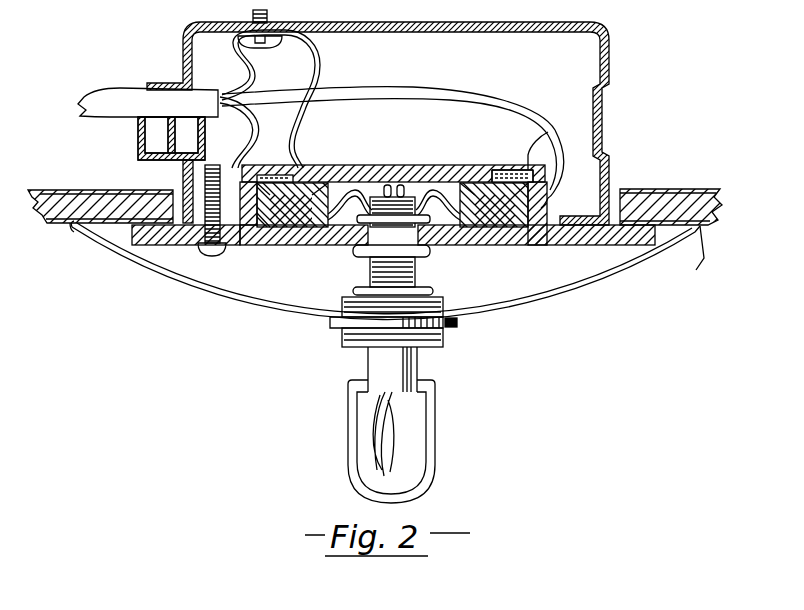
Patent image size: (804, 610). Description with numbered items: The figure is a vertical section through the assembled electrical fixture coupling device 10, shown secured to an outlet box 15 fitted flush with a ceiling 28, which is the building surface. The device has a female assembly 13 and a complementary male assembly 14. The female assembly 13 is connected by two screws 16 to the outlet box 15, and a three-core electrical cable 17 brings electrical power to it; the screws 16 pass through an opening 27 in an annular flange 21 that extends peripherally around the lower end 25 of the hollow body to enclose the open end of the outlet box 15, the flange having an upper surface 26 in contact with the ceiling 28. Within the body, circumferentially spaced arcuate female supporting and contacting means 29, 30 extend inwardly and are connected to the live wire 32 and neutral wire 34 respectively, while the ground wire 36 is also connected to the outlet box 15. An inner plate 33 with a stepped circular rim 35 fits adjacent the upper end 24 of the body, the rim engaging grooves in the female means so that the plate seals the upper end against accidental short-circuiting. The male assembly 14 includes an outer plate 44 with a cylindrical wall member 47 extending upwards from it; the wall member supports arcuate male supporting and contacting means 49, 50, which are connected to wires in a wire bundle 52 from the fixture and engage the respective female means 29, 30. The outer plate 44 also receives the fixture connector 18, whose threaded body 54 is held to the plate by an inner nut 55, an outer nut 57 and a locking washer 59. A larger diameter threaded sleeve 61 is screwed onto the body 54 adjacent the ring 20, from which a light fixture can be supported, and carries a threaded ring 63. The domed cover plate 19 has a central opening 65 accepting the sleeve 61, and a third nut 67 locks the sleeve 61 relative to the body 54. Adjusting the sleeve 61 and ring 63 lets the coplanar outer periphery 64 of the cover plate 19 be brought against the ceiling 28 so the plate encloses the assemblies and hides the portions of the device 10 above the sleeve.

The electrical fixture coupling device 10 is at (145, 286).
The female assembly 13 is at (540, 128).
The male assembly 14 is at (280, 290).
The outlet box 15 is at (432, 12).
The screws 16 is at (205, 186).
The three-core electrical cable 17 is at (104, 98).
The fixture connector 18 is at (438, 354).
The domed cover plate 19 is at (524, 312).
The ring 20 is at (418, 486).
The annular flange 21 is at (222, 246).
The upper end 24 is at (541, 141).
The lower end 25 is at (545, 248).
The upper surface 26 is at (148, 222).
The opening 27 is at (200, 230).
The ceiling 28 is at (50, 226).
The female supporting and contacting means 29 is at (510, 244).
The female supporting and contacting means 30 is at (280, 243).
The live wire 32 is at (426, 102).
The inner plate 33 is at (410, 168).
The neutral wire 34 is at (254, 130).
The stepped circular rim 35 is at (286, 176).
The ground wire 36 is at (320, 70).
The outer plate 44 is at (458, 238).
The cylindrical wall member 47 is at (352, 160).
The male supporting and contacting means 49 is at (542, 192).
The male supporting and contacting means 50 is at (300, 166).
The wire bundle 52 is at (368, 455).
The threaded body 54 is at (402, 172).
The inner nut 55 is at (432, 180).
The outer nut 57 is at (428, 252).
The locking washer 59 is at (325, 243).
The threaded sleeve 61 is at (442, 340).
The threaded ring 63 is at (332, 326).
The outer periphery 64 is at (684, 257).
The central opening 65 is at (340, 306).
The third nut 67 is at (440, 292).